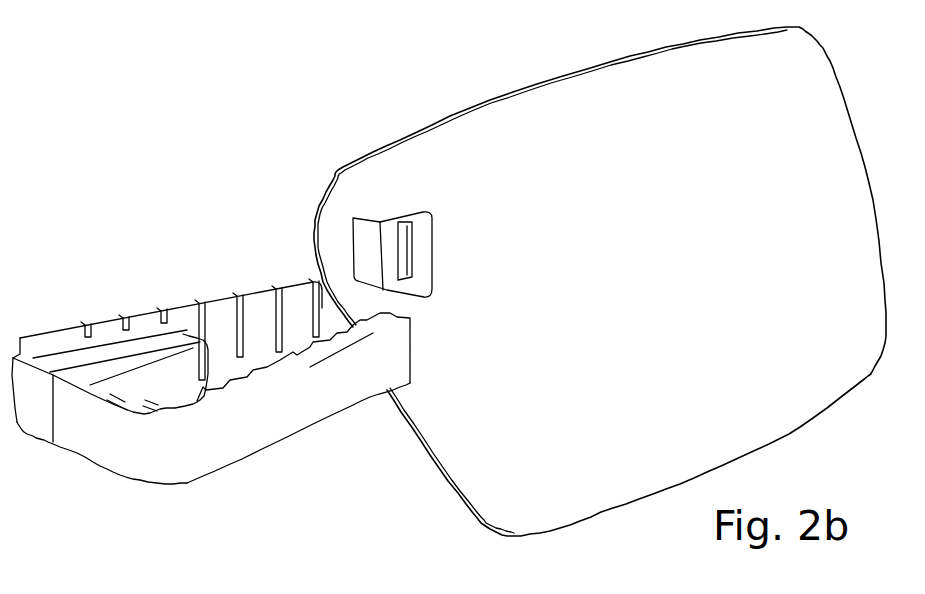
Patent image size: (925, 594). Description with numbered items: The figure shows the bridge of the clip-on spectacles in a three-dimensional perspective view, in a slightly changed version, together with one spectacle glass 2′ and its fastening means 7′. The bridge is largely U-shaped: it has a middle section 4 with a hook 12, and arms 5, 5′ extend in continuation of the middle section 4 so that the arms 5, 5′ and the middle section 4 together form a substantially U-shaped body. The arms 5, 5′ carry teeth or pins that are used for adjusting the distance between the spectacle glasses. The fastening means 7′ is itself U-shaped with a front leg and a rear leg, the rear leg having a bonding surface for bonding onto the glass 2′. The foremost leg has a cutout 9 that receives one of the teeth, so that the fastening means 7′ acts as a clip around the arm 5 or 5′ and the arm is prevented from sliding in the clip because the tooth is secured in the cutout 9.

The lens 2′ is at (600, 281).
The middle section 4 is at (73, 440).
The arm 5 is at (277, 420).
The arm 5′ is at (133, 317).
The tab 7′ is at (355, 225).
The cutout 9 is at (403, 233).
The hook 12 is at (147, 345).